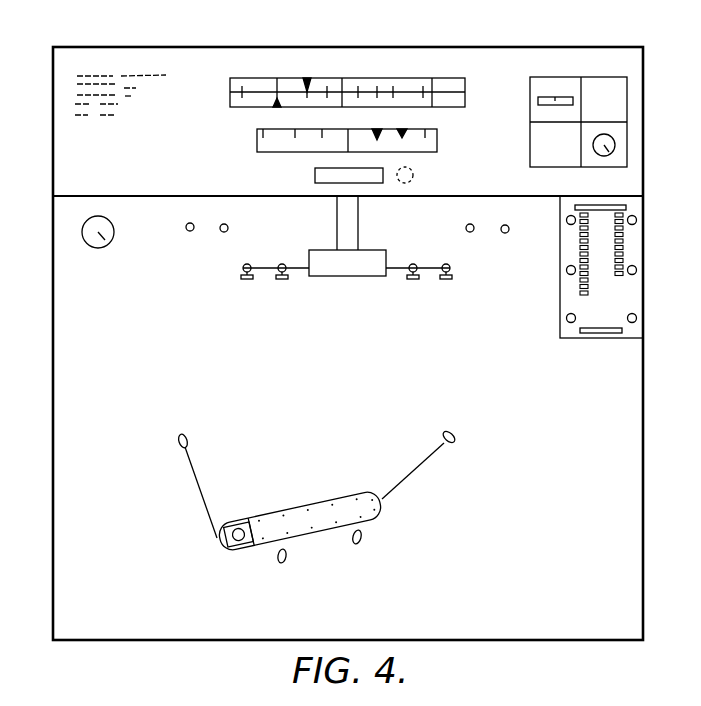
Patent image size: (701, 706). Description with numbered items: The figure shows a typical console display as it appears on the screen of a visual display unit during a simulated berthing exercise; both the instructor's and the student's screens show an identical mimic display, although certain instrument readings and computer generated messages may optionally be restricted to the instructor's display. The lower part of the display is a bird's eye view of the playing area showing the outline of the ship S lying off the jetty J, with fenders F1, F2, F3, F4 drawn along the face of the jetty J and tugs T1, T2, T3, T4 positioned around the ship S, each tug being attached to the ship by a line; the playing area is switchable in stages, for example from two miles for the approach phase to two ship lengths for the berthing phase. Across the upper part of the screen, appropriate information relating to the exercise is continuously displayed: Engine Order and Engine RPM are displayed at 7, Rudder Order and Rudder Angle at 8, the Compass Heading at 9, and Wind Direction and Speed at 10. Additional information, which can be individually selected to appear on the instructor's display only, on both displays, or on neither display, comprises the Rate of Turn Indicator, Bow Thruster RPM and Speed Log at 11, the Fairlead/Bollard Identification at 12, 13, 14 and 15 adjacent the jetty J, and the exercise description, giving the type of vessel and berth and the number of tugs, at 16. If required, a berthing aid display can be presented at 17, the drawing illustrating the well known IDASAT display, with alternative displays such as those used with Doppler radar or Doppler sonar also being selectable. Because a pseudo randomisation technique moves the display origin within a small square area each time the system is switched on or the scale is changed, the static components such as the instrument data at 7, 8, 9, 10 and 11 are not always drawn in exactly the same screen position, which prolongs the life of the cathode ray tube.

The Engine Order/Engine RPM display 7 is at (375, 78).
The Rudder Order/Rudder Angle display 8 is at (430, 144).
The Compass Heading display 9 is at (315, 175).
The Wind Direction and Speed display 10 is at (82, 230).
The Rate of Turn Indicator, Bow Thruster RPM and Speed Log display 11 is at (618, 103).
The Fairlead/Bollard Identification 12 is at (186, 226).
The Fairlead/Bollard Identification 13 is at (228, 226).
The Fairlead/Bollard Identification 14 is at (466, 226).
The Fairlead/Bollard Identification 15 is at (509, 227).
The exercise description 16 is at (78, 79).
The berthing aid display 17 is at (627, 296).
The jetty J is at (348, 270).
The fender F1 is at (248, 283).
The fender F2 is at (283, 283).
The fender F3 is at (414, 283).
The fender F4 is at (447, 283).
The ship S is at (314, 525).
The tug T1 is at (188, 438).
The tug T2 is at (455, 439).
The tug T3 is at (362, 539).
The tug T4 is at (281, 565).